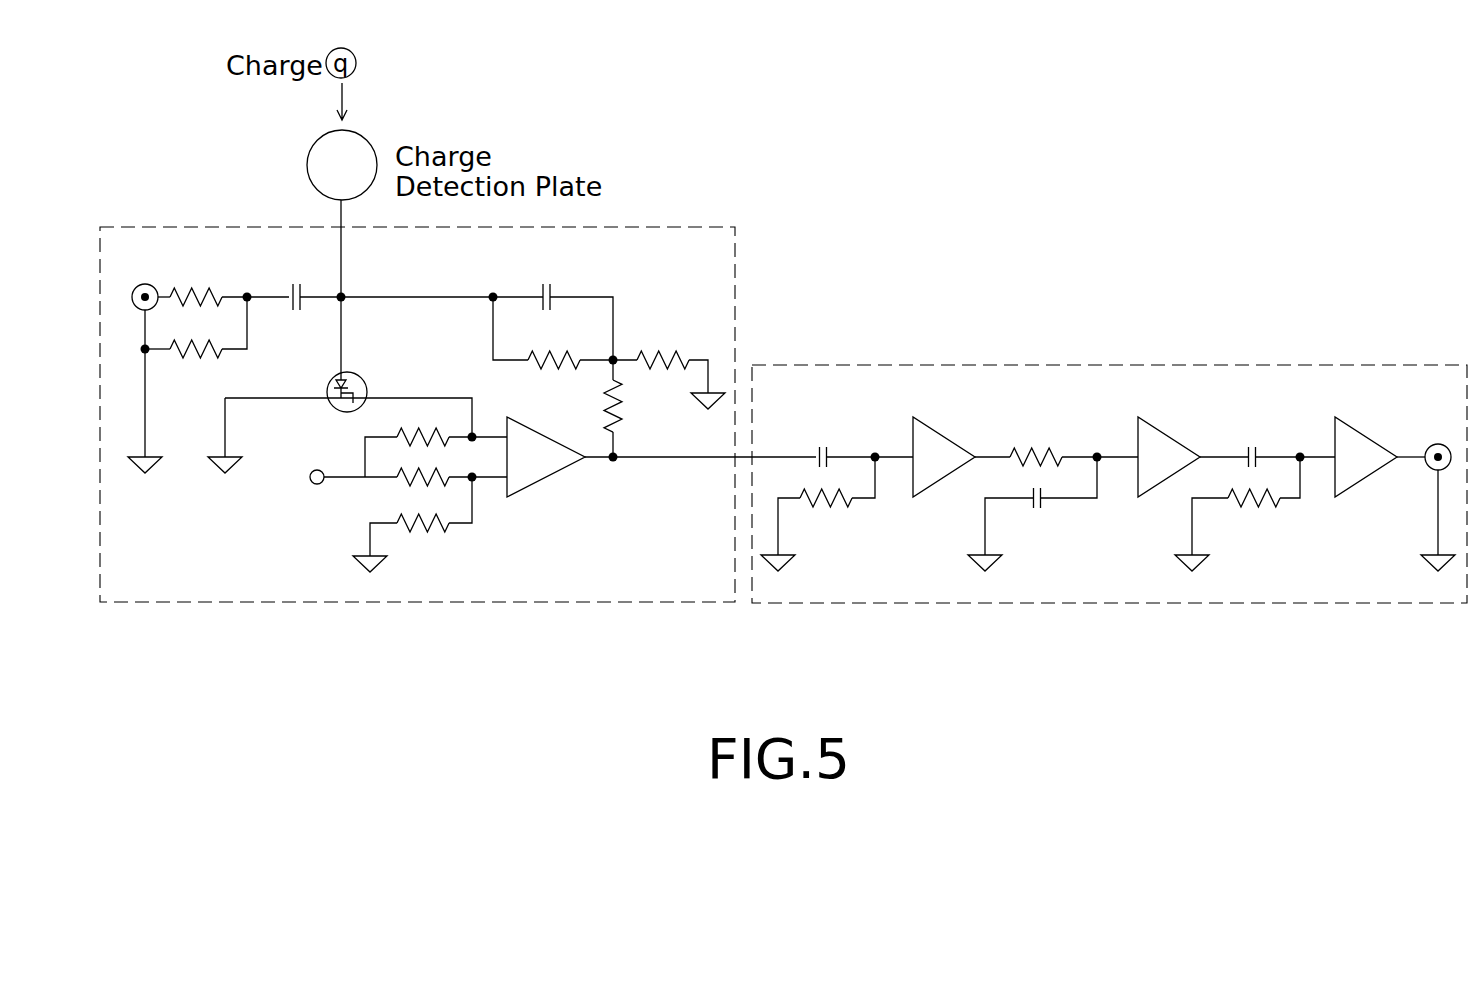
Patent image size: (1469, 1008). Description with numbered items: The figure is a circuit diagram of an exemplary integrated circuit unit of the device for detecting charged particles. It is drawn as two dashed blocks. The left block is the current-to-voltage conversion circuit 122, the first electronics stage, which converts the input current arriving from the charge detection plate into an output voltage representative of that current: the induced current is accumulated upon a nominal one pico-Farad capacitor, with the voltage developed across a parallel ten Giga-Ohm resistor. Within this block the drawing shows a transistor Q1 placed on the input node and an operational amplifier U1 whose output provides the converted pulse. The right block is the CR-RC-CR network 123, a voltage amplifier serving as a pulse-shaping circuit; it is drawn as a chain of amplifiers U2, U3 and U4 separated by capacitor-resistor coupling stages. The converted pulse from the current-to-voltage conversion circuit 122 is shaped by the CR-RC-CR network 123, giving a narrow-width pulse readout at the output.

The current-to-voltage conversion circuit 122 is at (665, 227).
The CR-RC-CR network 123 is at (1082, 365).
The reset transistor Q1 is at (367, 385).
The charge-sensitive operational amplifier U1 is at (546, 473).
The second-stage amplifier U2 is at (944, 474).
The third-stage amplifier U3 is at (1169, 474).
The output amplifier U4 is at (1366, 474).